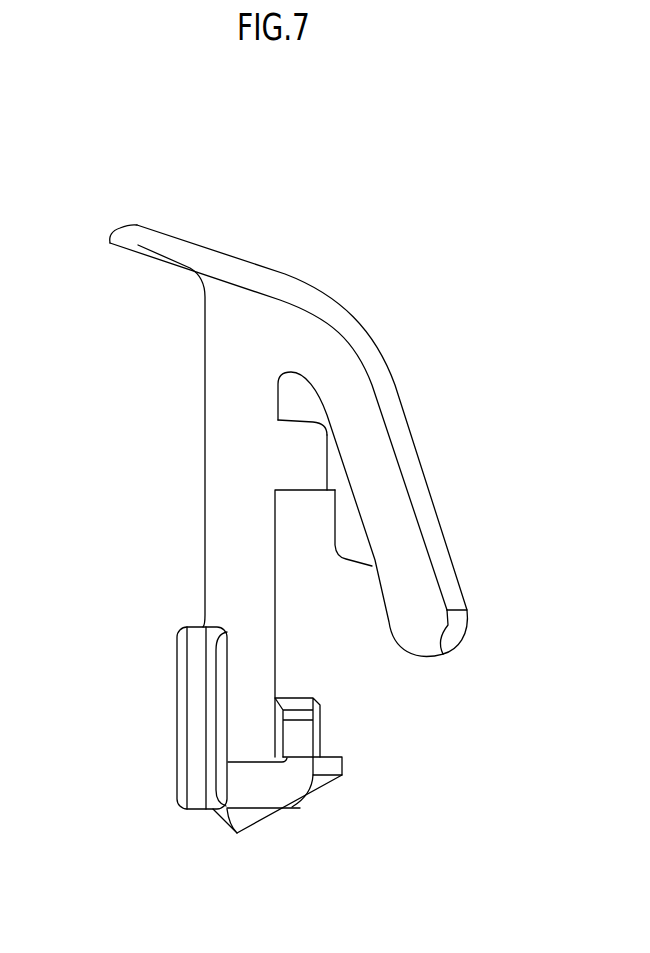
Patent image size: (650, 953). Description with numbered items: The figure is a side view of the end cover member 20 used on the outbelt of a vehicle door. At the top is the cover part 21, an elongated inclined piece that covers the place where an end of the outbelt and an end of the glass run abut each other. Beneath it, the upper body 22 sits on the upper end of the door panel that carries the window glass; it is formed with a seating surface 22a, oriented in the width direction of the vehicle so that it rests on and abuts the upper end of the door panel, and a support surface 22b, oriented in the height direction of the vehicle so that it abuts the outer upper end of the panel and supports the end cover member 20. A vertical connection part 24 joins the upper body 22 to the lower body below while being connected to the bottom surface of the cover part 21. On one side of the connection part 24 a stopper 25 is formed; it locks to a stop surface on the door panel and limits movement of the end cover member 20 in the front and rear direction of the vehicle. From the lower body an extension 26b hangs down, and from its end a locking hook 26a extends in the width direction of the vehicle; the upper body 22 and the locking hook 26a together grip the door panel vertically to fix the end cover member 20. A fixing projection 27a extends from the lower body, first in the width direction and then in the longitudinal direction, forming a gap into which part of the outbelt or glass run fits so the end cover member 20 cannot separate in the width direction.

The end cover member 20 is at (518, 149).
The cover part 21 is at (398, 422).
The upper body 22 is at (270, 461).
The seating surface 22a is at (300, 425).
The support surface 22b is at (327, 449).
The connection part 24 is at (222, 557).
The stopper 25 is at (303, 477).
The locking hook 26a is at (278, 788).
The extension 26b is at (194, 744).
The fixing projection 27a is at (303, 740).